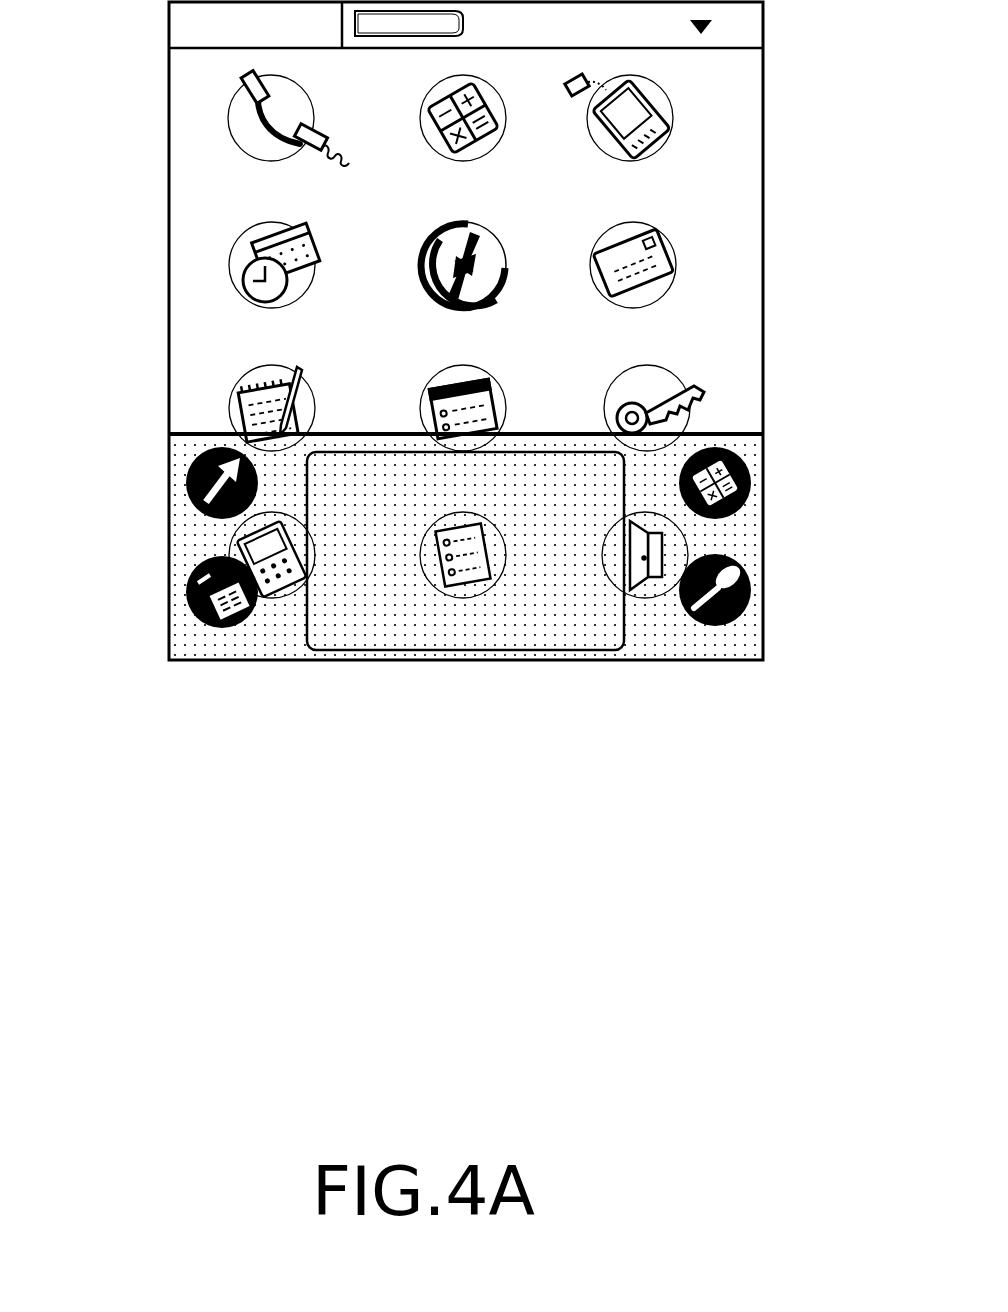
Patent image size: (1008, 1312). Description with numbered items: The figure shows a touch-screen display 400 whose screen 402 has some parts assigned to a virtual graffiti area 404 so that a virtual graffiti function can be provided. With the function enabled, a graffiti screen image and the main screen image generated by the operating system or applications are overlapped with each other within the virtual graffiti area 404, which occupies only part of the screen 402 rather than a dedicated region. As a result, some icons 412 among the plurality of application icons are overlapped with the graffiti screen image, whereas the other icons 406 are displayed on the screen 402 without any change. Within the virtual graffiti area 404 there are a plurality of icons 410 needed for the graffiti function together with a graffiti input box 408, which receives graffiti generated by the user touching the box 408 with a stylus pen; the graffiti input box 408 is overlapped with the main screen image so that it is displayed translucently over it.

The touch-screen display 400 is at (765, 144).
The screen 402 is at (738, 262).
The virtual graffiti area 404 is at (748, 550).
The icons 406 is at (238, 264).
The graffiti input box 408 is at (645, 628).
The icons 410 is at (190, 610).
The icons 412 is at (462, 598).